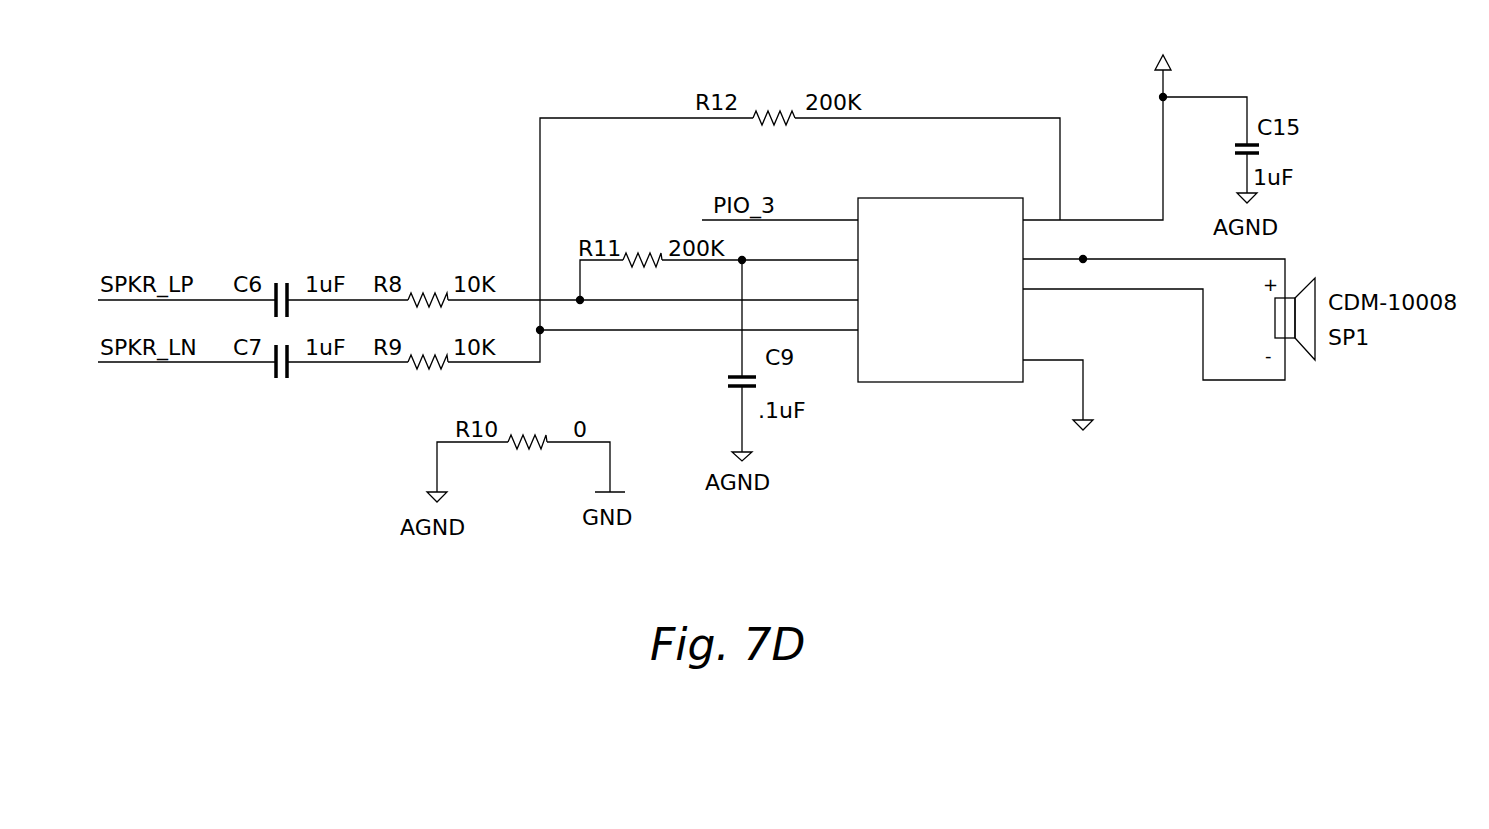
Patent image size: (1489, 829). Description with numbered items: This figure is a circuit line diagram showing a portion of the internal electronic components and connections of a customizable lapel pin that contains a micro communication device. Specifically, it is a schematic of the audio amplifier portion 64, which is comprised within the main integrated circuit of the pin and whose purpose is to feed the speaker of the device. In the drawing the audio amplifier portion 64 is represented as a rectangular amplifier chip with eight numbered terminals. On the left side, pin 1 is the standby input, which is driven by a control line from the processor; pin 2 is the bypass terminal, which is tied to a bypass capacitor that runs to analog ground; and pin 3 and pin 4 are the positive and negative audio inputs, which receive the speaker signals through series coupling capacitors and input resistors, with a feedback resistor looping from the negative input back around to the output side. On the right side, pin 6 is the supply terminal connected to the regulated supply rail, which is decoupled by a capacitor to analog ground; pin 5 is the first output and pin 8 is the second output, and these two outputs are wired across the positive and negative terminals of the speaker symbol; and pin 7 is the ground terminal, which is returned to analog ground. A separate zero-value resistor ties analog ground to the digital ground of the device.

The audio amplifier portion 64 is at (1010, 382).
The IC2 pin 1 STBY# (PIO_3) 1 is at (780, 211).
The IC2 pin 2 BYPASS 2 is at (800, 249).
The IC2 pin 3 VIN+ 3 is at (719, 287).
The IC2 pin 4 VIN- 4 is at (699, 318).
The IC2 pin 5 VOUT1 (SPKR+) 5 is at (1154, 308).
The IC2 pin 6 VCC (3.3V) 6 is at (1109, 127).
The IC2 pin 7 GND 7 is at (1071, 402).
The IC2 pin 8 VOUT2 (SPKR-) 8 is at (1133, 323).